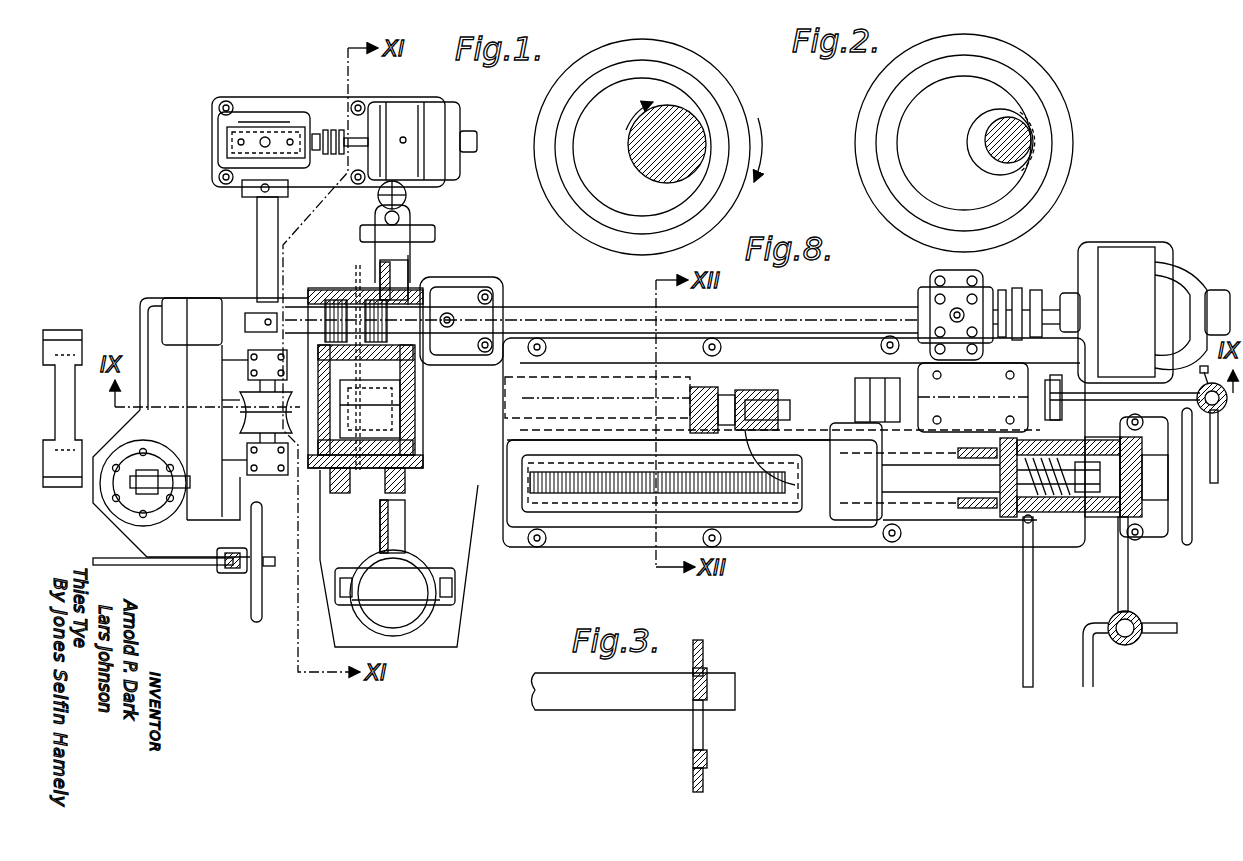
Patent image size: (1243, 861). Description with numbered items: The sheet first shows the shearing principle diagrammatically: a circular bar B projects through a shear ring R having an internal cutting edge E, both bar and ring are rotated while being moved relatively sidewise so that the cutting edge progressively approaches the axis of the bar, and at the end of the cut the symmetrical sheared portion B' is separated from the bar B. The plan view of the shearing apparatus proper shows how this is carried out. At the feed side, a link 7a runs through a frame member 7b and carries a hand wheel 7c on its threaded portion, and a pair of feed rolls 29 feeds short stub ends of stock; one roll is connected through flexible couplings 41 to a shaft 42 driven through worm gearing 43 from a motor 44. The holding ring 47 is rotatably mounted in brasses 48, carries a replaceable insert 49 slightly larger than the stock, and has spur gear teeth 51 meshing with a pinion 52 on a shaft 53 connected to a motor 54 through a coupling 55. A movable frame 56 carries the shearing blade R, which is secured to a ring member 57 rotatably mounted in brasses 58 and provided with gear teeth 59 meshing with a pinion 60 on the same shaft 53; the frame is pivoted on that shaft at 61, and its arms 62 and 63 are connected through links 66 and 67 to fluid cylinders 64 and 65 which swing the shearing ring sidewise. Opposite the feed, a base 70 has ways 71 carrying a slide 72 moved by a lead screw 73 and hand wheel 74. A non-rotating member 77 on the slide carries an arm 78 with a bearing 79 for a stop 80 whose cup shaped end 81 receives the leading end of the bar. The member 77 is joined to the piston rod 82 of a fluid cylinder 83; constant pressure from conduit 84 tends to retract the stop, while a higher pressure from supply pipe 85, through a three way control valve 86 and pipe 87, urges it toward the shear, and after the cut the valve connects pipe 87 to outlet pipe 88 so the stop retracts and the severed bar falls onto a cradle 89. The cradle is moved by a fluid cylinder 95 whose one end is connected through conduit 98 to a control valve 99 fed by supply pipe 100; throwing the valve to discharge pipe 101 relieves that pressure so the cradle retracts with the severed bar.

In FIG. 8, the link 7a is at (156, 565).
In FIG. 8, the frame member 7b is at (225, 575).
In FIG. 8, the hand wheel 7c is at (252, 600).
In FIG. 8, the feed rolls 29 is at (242, 412).
In FIG. 8, the flexible couplings 41 is at (250, 318).
In FIG. 8, the shaft 42 is at (260, 172).
In FIG. 8, the worm gearing 43 is at (262, 138).
In FIG. 8, the motor 44 is at (403, 115).
In FIG. 8, the ring 47 is at (318, 468).
In FIG. 8, the brasses 48 is at (330, 478).
In FIG. 8, the replaceable insert 49 is at (342, 430).
In FIG. 8, the spur gear teeth 51 is at (338, 490).
In FIG. 8, the pinion 52 is at (345, 292).
In FIG. 8, the shaft 53 is at (797, 305).
In FIG. 8, the motor 54 is at (1136, 312).
In FIG. 8, the coupling 55 is at (1020, 296).
In FIG. 8, the movable frame 56 is at (418, 478).
In FIG. 8, the ring member 57 is at (422, 458).
In FIG. 8, the brasses 58 is at (420, 468).
In FIG. 8, the gear teeth 59 is at (405, 500).
In FIG. 8, the pinion 60 is at (420, 255).
In FIG. 8, the pivot mounting 61 is at (440, 290).
In FIG. 8, the arm 62 is at (405, 262).
In FIG. 8, the arm 63 is at (380, 528).
In FIG. 8, the fluid cylinder 64 is at (406, 202).
In FIG. 8, the fluid cylinder 65 is at (408, 618).
In FIG. 8, the link 66 is at (412, 228).
In FIG. 8, the link 67 is at (455, 582).
In FIG. 8, the base 70 is at (794, 447).
In FIG. 8, the ways 71 is at (782, 527).
In FIG. 8, the slide 72 is at (948, 525).
In FIG. 8, the lead screw 73 is at (630, 495).
In FIG. 8, the hand wheel 74 is at (1188, 545).
In FIG. 8, the member 77 is at (841, 471).
In FIG. 8, the arm 78 is at (770, 457).
In FIG. 8, the bearing 79 is at (752, 396).
In FIG. 8, the stop 80 is at (730, 390).
In FIG. 8, the cup shaped end 81 is at (700, 400).
In FIG. 8, the piston rod 82 is at (980, 477).
In FIG. 8, the fluid cylinder 83 is at (1082, 520).
In FIG. 8, the conduit 84 is at (1033, 592).
In FIG. 8, the fluid supply pipe 85 is at (1080, 688).
In FIG. 8, the three way control valve 86 is at (1122, 645).
In FIG. 8, the pipe 87 is at (1128, 590).
In FIG. 8, the outlet pipe 88 is at (1163, 626).
In FIG. 8, the cradle 89 is at (580, 385).
In FIG. 8, the fluid cylinder 95 is at (965, 402).
In FIG. 8, the conduit 98 is at (1115, 390).
In FIG. 8, the control valve 99 is at (1220, 410).
In FIG. 8, the fluid supply pipe 100 is at (1216, 484).
In FIG. 8, the discharge pipe 101 is at (1204, 386).
In FIG. 1, the circular bar B is at (673, 142).
In FIG. 2, the circular bar B is at (980, 142).
In FIG. 3, the circular bar B is at (634, 706).
In FIG. 8, the circular bar B is at (616, 434).
In FIG. 3, the sheared portion B' is at (746, 719).
In FIG. 1, the internal cutting edge E is at (682, 95).
In FIG. 2, the internal cutting edge E is at (980, 78).
In FIG. 3, the internal cutting edge E is at (694, 744).
In FIG. 1, the shear ring R is at (728, 100).
In FIG. 2, the shear ring R is at (1038, 75).
In FIG. 3, the shear ring R is at (704, 653).
In FIG. 8, the shear ring R is at (378, 418).